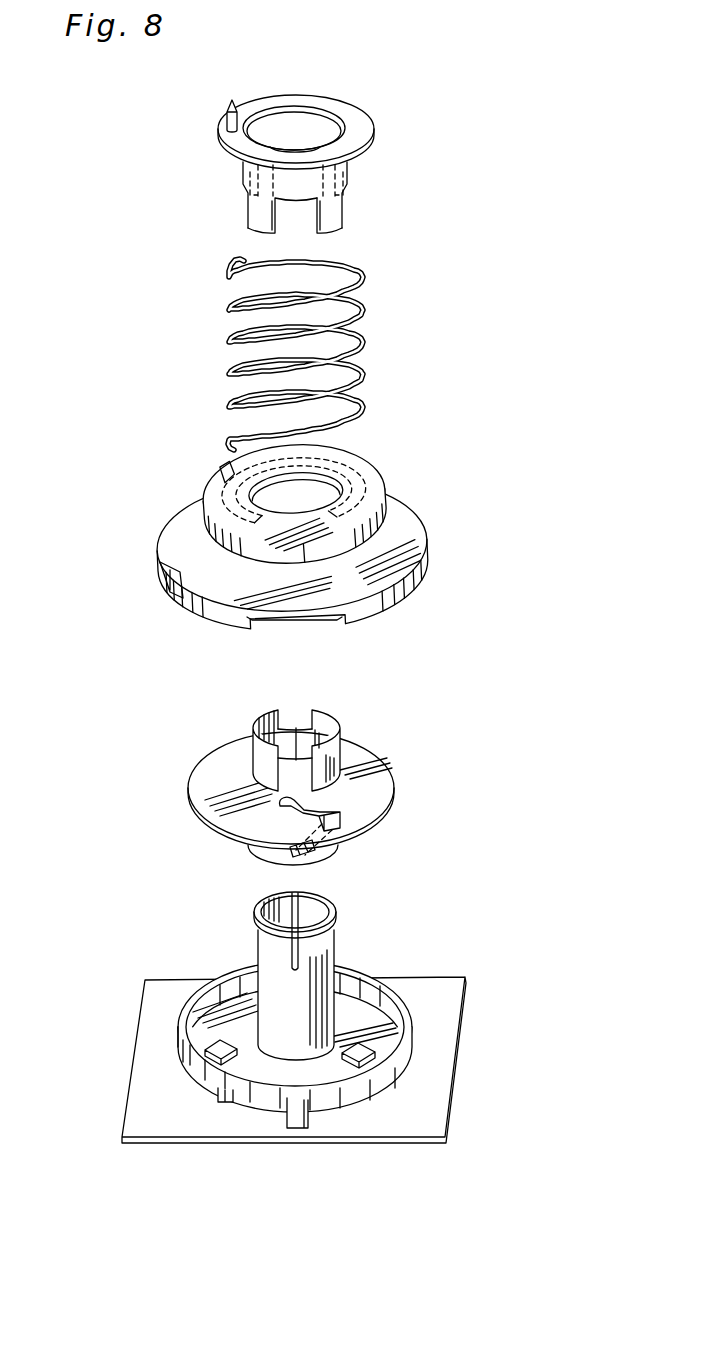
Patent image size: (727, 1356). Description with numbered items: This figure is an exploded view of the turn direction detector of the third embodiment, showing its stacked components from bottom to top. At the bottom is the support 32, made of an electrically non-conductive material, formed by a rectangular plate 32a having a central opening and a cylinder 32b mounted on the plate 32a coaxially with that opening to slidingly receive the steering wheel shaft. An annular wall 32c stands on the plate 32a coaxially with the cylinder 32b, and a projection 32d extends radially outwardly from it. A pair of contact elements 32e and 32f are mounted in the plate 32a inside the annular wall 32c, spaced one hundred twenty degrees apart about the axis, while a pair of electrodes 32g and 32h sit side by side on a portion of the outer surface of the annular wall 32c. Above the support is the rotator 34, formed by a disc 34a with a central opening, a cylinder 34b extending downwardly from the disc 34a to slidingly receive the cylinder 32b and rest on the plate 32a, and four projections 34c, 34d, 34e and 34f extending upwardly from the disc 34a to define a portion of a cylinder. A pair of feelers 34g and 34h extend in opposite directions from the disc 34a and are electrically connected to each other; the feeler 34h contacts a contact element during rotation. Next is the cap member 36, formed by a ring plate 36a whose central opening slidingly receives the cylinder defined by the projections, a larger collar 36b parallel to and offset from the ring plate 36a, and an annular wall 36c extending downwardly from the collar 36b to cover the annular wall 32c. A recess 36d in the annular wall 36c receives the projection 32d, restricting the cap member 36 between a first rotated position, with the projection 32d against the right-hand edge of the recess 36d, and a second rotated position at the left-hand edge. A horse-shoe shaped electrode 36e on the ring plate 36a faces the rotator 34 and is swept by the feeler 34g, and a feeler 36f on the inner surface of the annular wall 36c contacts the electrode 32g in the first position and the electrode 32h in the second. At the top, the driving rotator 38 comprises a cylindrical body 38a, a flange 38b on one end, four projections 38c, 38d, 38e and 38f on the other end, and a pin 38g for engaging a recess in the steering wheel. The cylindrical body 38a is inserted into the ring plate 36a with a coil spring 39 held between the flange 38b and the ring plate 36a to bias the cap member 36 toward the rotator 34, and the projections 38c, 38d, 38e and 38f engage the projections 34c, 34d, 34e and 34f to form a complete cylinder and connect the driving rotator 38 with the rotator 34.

The support 32 is at (318, 1044).
The rectangular plate 32a is at (442, 1000).
The cylinder 32b is at (317, 990).
The annular wall 32c is at (388, 998).
The projection 32d is at (290, 1102).
The contact element 32e is at (223, 1042).
The contact element 32f is at (363, 1050).
The electrode 32g is at (183, 1063).
The electrode 32h is at (217, 1088).
The rotator 34 is at (334, 799).
The disc 34a is at (373, 802).
The cylinder 34b is at (273, 857).
The projection 34c is at (320, 722).
The projection 34d is at (263, 715).
The projection 34e is at (263, 755).
The projection 34f is at (330, 760).
The feeler 34g is at (322, 843).
The feeler 34h is at (328, 856).
The cap member 36 is at (315, 536).
The ring plate 36a is at (356, 462).
The collar 36b is at (405, 541).
The annular wall 36c is at (425, 576).
The recess 36d is at (318, 626).
The horse-shoe shaped electrode 36e is at (357, 488).
The feeler 36f is at (175, 587).
The driving rotator 38 is at (289, 155).
The cylindrical body 38a is at (300, 183).
The flange 38b is at (228, 138).
The projection 38c is at (333, 215).
The projection 38d is at (333, 183).
The projection 38e is at (253, 190).
The projection 38f is at (260, 217).
The pin 38g is at (223, 128).
The coil spring 39 is at (374, 312).